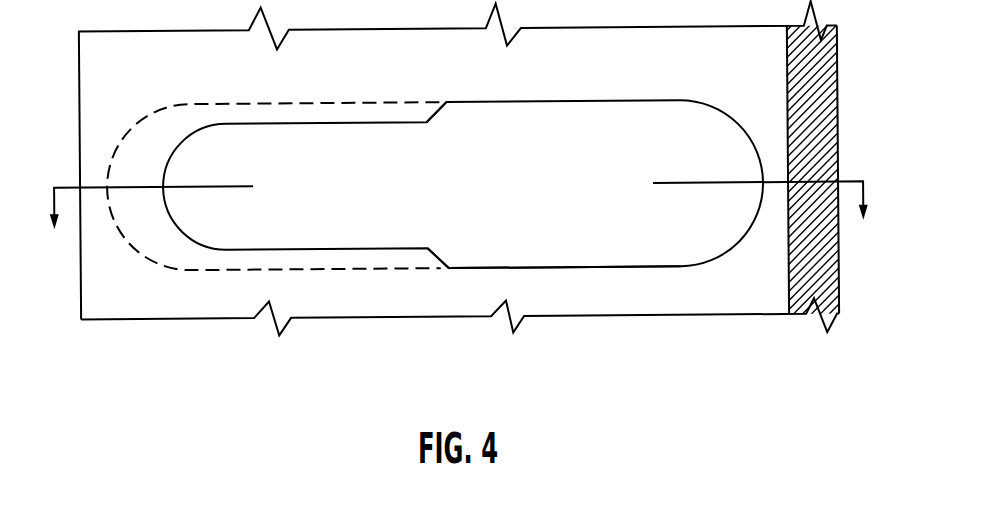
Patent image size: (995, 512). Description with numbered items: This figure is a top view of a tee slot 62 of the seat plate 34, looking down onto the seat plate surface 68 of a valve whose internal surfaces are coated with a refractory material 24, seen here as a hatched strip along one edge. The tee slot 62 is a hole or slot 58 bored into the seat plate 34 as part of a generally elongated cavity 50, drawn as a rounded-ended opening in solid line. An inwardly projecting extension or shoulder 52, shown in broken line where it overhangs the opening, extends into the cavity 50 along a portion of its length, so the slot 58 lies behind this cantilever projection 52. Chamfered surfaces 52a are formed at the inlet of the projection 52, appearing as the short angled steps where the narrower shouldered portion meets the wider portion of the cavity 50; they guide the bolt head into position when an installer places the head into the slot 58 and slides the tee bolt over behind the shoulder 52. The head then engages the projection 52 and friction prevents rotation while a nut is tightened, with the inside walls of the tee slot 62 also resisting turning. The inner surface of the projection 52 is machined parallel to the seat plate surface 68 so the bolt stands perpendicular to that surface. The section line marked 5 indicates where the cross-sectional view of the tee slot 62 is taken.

The refractory material 24 is at (840, 290).
The seat plate 34 is at (160, 318).
The elongated cavity 50 is at (611, 113).
The shoulder 52 is at (358, 109).
The chamfered surfaces 52a is at (447, 106).
The slot 58 is at (329, 222).
The tee slot 62 is at (633, 268).
The seat plate surface 68 is at (141, 76).
The section line 5- 5 is at (463, 230).